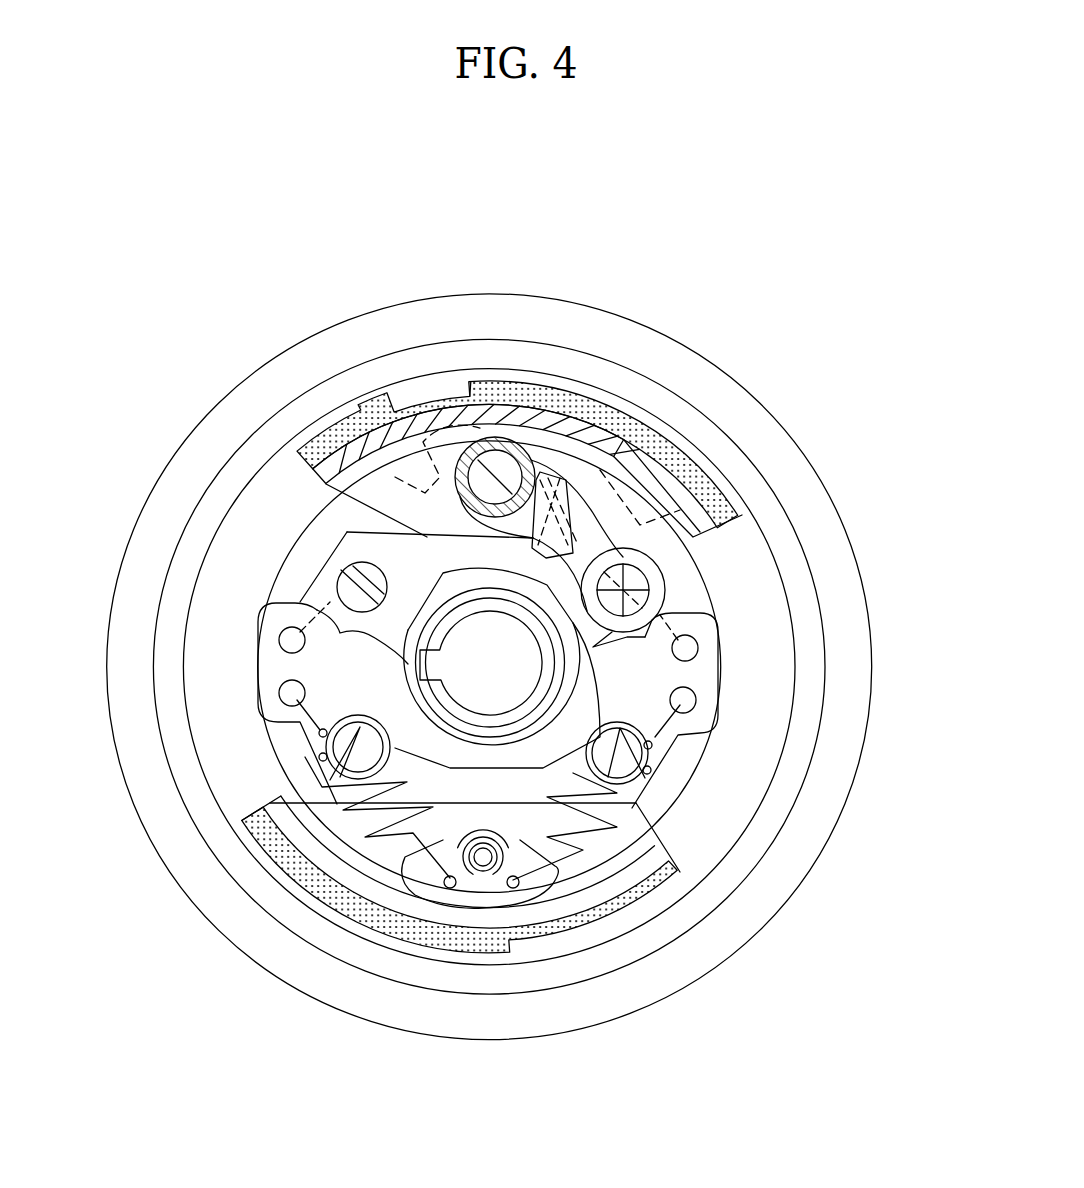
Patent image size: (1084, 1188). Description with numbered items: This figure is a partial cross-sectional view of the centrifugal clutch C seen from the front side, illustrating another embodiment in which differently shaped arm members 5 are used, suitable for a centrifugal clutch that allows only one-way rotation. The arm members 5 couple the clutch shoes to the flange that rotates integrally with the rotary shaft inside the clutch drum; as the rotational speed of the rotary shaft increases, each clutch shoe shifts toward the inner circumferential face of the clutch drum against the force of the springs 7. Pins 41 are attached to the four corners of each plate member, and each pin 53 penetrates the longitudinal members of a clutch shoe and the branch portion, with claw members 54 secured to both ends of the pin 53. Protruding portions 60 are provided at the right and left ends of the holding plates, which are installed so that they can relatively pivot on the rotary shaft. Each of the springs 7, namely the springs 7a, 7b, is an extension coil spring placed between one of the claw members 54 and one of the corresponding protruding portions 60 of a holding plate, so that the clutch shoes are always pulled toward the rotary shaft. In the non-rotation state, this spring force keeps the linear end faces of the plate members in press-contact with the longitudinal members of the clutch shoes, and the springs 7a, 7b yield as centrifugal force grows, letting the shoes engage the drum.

The centrifugal clutch C is at (725, 222).
The arm members 5 is at (597, 470).
The springs 7 is at (586, 599).
The spring 7a is at (387, 497).
The spring 7b is at (660, 510).
The pins 41 is at (660, 580).
The pin 53 is at (497, 465).
The claw members 54 is at (453, 397).
The protruding portions 60 is at (257, 650).